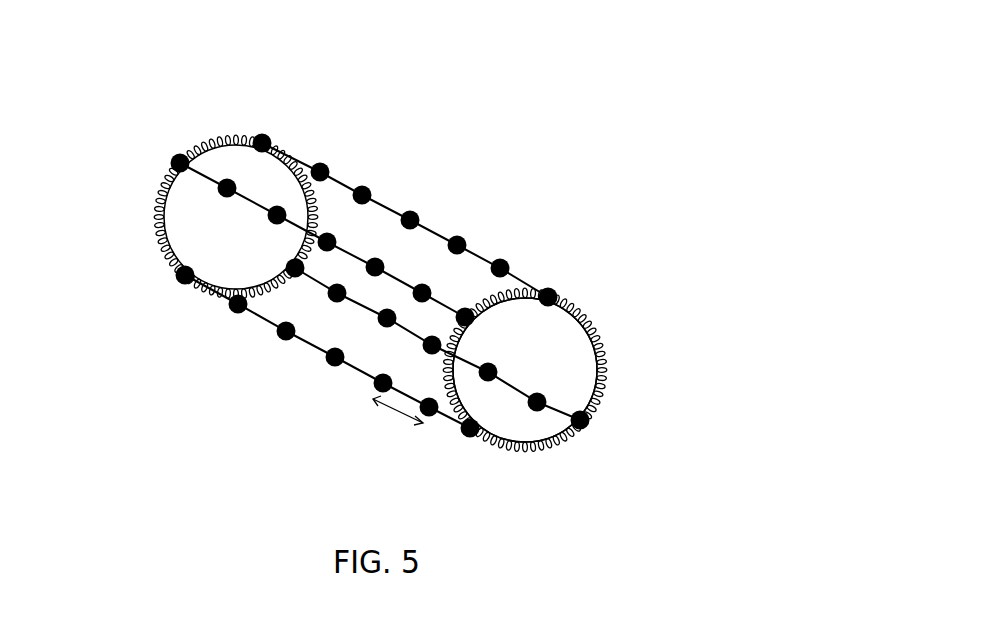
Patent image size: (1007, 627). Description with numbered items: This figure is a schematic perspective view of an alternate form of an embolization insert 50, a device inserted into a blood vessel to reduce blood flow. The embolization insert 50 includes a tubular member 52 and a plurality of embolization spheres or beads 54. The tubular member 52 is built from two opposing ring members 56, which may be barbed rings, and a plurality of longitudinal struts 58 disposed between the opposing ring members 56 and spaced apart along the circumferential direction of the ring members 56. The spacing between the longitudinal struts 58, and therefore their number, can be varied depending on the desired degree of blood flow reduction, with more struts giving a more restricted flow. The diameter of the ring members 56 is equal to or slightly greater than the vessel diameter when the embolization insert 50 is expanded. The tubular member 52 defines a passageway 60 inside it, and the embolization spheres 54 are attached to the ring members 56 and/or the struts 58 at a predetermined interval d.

The embolization insert 50 is at (421, 92).
The tubular member 52 is at (536, 272).
The embolization spheres 54 is at (375, 190).
The ring members 56 is at (165, 192).
The longitudinal struts 58 is at (345, 186).
The passageway 60 is at (513, 360).